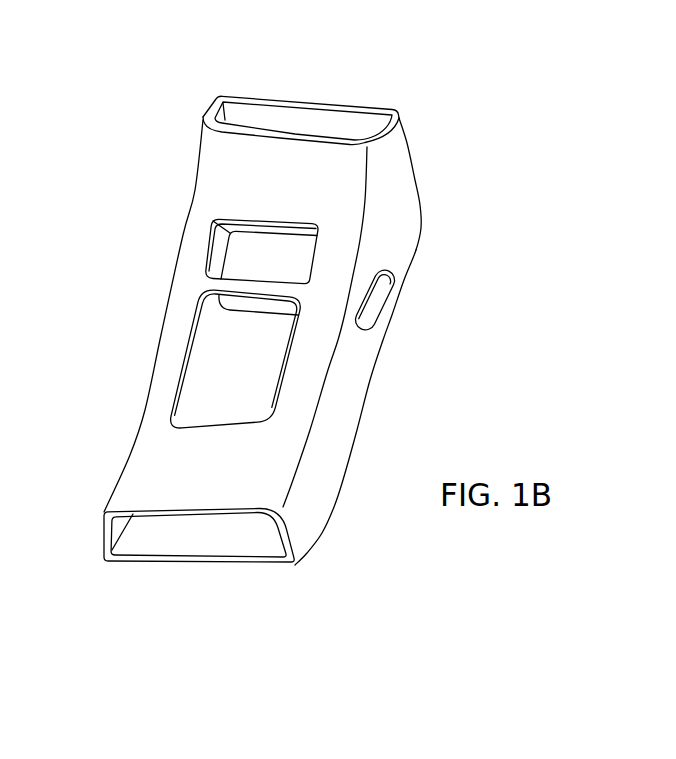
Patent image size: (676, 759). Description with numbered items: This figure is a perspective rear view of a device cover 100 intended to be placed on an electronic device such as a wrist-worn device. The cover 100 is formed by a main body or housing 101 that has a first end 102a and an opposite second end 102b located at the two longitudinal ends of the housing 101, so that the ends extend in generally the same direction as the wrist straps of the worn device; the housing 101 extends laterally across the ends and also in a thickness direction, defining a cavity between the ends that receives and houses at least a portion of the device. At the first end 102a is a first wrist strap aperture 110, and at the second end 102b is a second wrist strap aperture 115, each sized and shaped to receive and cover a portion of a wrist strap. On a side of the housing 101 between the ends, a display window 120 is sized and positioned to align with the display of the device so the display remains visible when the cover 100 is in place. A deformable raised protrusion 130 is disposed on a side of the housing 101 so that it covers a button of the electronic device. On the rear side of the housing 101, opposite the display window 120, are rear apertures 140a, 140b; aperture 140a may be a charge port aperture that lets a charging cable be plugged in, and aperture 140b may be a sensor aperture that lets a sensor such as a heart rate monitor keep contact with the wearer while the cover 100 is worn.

The device cover 100 is at (130, 115).
The housing 101 is at (299, 187).
The first end 102a is at (425, 147).
The second end 102b is at (327, 560).
The first wrist strap aperture 110 is at (340, 103).
The second wrist strap aperture 115 is at (146, 550).
The display window 120 is at (226, 226).
The raised protrusion 130 is at (379, 293).
The rear aperture 140a is at (204, 256).
The rear aperture 140b is at (179, 356).